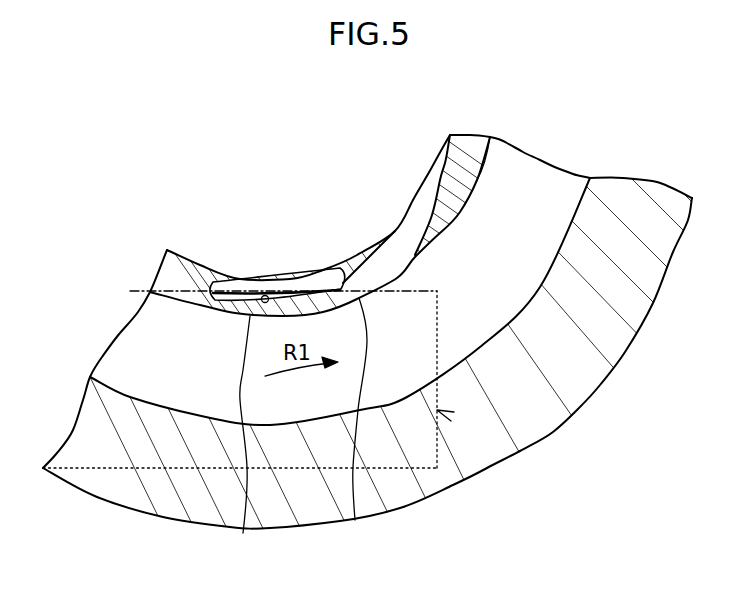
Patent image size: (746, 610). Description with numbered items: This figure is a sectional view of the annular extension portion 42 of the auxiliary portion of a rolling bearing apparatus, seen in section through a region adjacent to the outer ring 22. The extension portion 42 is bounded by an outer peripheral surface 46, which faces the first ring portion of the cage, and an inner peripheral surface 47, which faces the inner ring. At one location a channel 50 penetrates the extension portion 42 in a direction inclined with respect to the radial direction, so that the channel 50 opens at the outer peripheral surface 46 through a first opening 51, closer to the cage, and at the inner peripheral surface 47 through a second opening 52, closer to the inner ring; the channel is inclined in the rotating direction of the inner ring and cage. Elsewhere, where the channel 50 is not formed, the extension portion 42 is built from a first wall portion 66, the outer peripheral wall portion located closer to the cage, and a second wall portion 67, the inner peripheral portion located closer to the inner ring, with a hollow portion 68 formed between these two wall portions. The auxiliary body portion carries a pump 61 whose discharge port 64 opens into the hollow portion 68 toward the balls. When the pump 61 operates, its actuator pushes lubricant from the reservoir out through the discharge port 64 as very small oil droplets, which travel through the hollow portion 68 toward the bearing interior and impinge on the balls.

The outer ring 22 is at (582, 355).
The extension portion 42 is at (350, 257).
The outer peripheral surface 46 is at (477, 180).
The inner peripheral surface 47 is at (193, 263).
The channel 50 is at (397, 258).
The first opening 51 is at (355, 520).
The second opening 52 is at (420, 198).
The pump 61 is at (437, 410).
The discharge port 64 is at (267, 295).
The first wall portion 66 is at (243, 533).
The second wall portion 67 is at (307, 270).
The hollow portion 68 is at (228, 287).